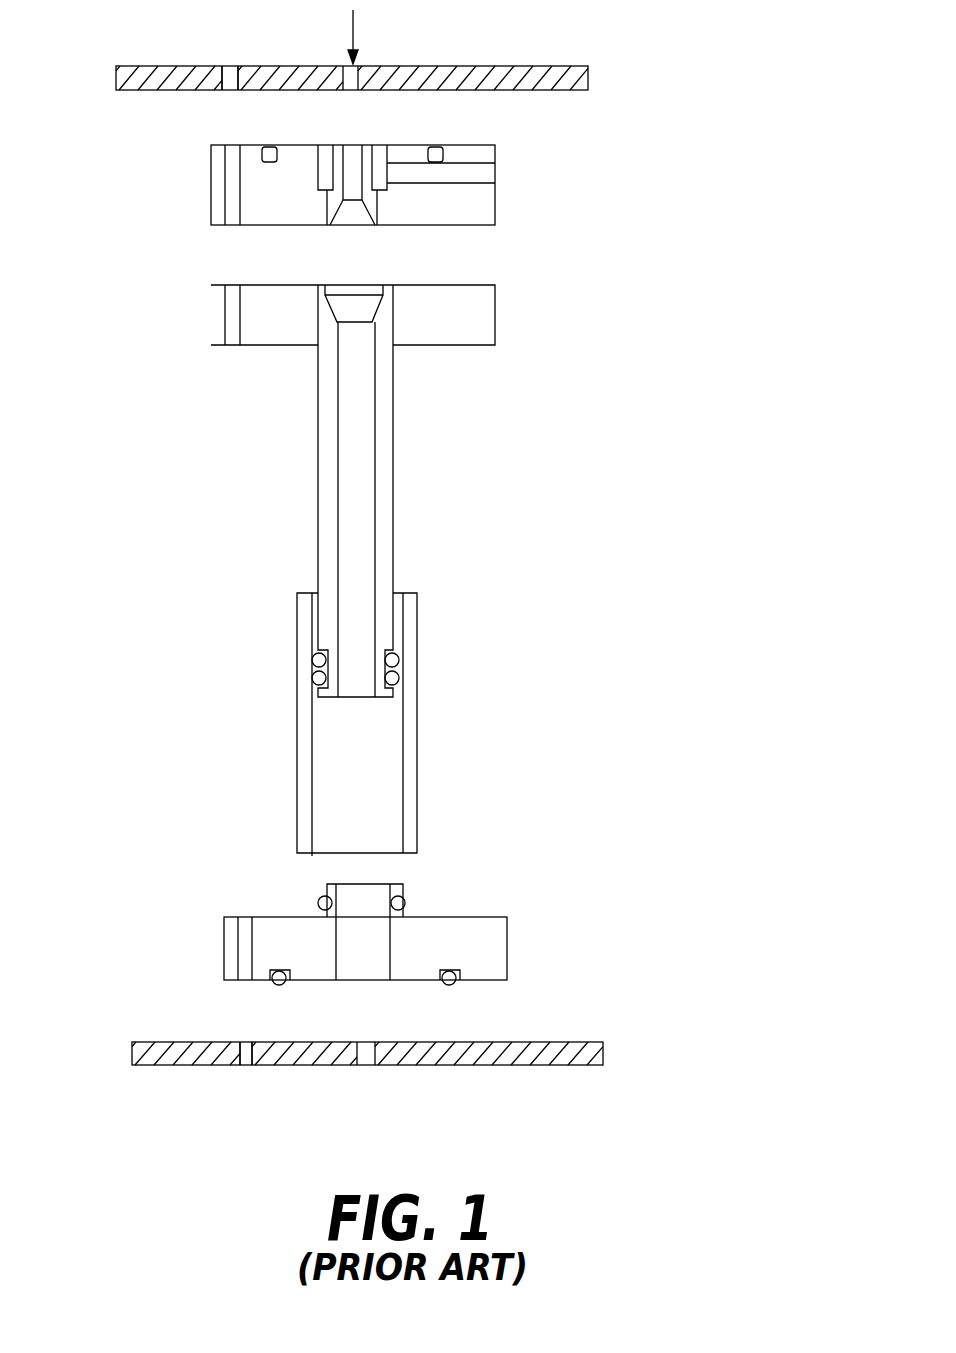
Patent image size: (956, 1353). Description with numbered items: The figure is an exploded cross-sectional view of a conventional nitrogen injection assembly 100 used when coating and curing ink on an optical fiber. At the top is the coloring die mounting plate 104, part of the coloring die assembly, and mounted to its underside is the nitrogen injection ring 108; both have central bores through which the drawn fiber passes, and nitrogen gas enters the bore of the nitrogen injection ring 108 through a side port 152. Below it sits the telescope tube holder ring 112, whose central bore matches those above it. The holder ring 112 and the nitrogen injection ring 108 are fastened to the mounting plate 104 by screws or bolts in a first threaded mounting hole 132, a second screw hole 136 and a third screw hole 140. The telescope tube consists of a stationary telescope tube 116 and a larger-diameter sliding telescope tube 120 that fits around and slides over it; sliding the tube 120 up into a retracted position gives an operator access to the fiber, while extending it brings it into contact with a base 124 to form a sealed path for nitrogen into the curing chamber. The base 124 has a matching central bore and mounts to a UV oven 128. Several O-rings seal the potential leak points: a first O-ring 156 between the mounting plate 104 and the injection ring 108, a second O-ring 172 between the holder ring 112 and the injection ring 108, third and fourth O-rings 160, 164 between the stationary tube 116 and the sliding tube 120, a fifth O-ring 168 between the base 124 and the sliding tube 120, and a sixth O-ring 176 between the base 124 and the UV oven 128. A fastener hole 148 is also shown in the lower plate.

The nitrogen injection assembly 100 is at (720, 855).
The coloring die mounting plate 104 is at (447, 66).
The nitrogen injection ring 108 is at (211, 181).
The telescope tube holder ring 112 is at (495, 342).
The stationary telescope tube 116 is at (394, 485).
The sliding telescope tube 120 is at (418, 728).
The base 124 is at (507, 955).
The UV oven 128 is at (605, 1053).
The first threaded mounting hole 132 is at (225, 92).
The second screw hole 136 is at (222, 225).
The third screw hole 140 is at (211, 290).
The aperture in lower plate 148 is at (245, 1066).
The side port 152 is at (495, 179).
The first O-ring 156 is at (445, 146).
The third O-ring 160 is at (403, 660).
The fourth O-ring 164 is at (403, 680).
The fifth O-ring 168 is at (408, 900).
The second O-ring 172 is at (393, 287).
The sixth O-ring 176 is at (277, 983).